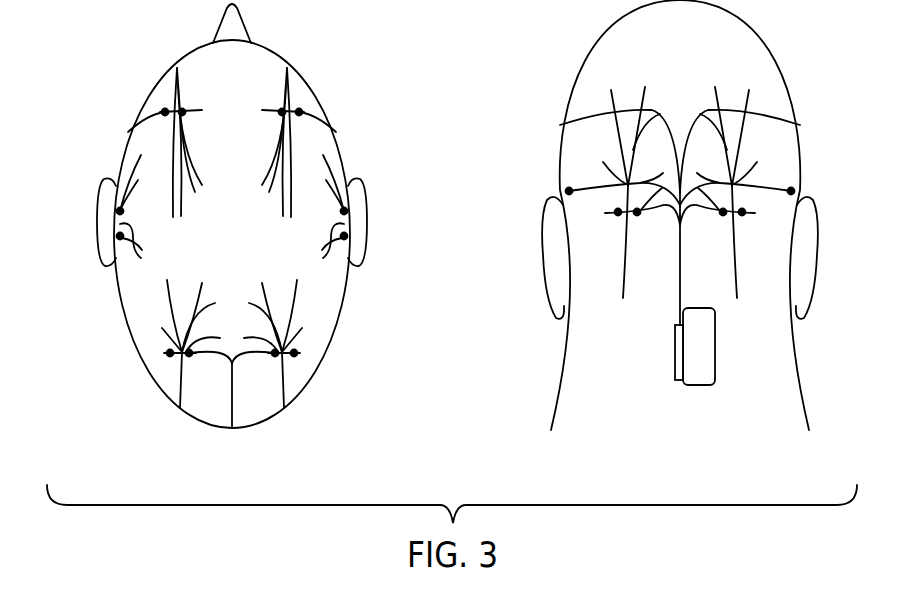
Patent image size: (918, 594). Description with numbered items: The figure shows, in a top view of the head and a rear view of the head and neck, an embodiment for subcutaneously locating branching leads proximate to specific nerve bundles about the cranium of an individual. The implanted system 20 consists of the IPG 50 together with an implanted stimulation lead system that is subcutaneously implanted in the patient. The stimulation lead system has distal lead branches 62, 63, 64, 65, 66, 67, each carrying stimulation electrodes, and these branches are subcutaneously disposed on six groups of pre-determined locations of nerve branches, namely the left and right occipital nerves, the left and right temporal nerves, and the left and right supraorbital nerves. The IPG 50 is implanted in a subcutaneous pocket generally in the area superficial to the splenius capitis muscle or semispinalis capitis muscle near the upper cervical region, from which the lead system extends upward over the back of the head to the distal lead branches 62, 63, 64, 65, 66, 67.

The implanted system 20 is at (703, 397).
The IPG 50 is at (716, 348).
The distal lead branch 62 is at (170, 369).
The distal lead branch 63 is at (103, 212).
The distal lead branch 64 is at (163, 101).
The distal lead branch 65 is at (301, 101).
The distal lead branch 66 is at (361, 212).
The distal lead branch 67 is at (294, 369).